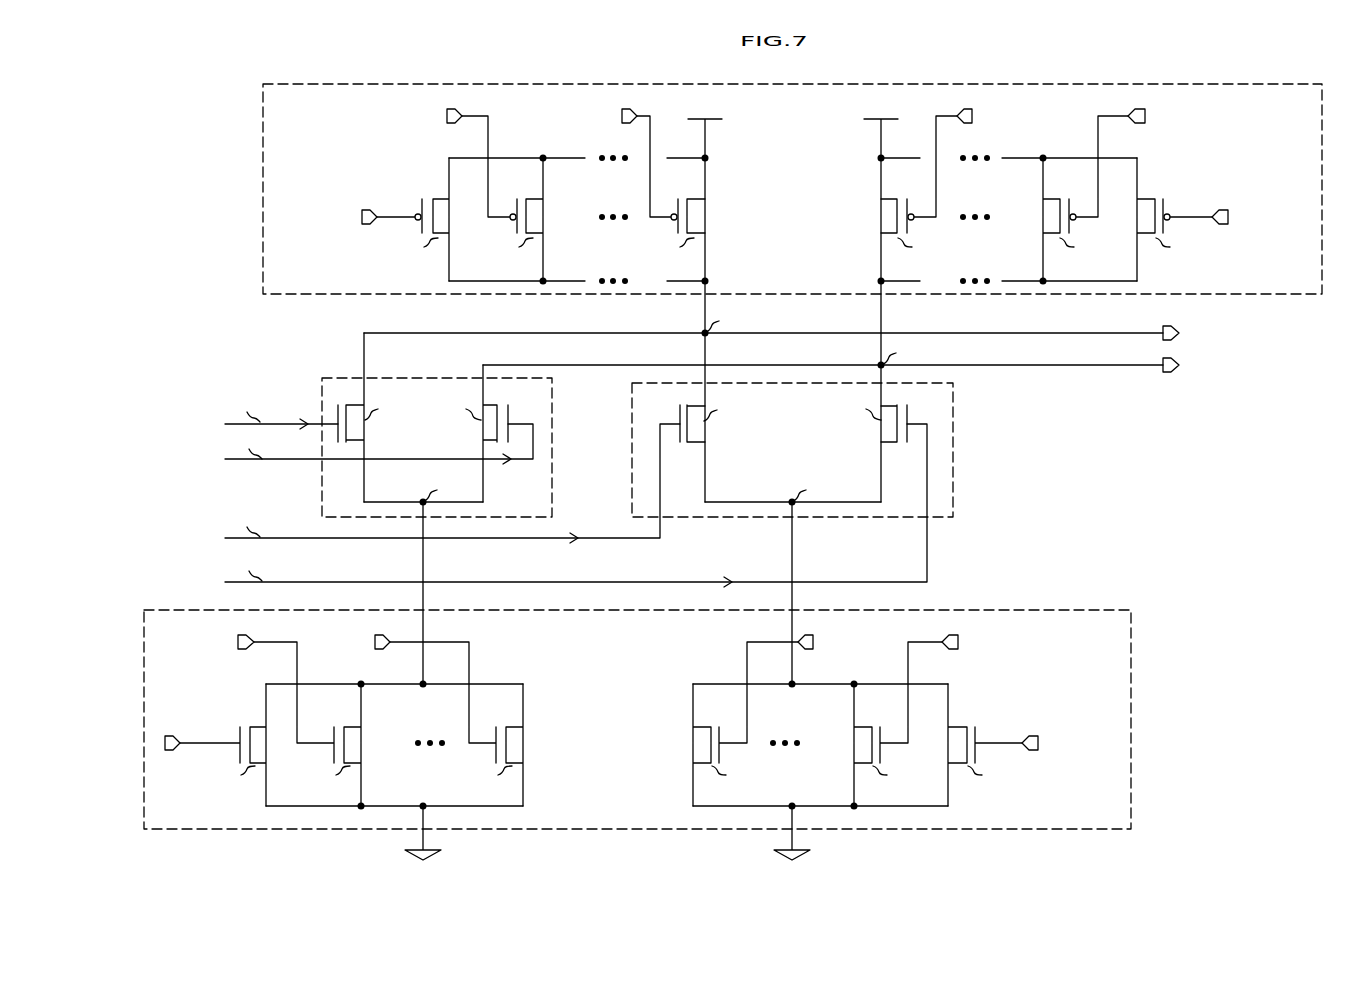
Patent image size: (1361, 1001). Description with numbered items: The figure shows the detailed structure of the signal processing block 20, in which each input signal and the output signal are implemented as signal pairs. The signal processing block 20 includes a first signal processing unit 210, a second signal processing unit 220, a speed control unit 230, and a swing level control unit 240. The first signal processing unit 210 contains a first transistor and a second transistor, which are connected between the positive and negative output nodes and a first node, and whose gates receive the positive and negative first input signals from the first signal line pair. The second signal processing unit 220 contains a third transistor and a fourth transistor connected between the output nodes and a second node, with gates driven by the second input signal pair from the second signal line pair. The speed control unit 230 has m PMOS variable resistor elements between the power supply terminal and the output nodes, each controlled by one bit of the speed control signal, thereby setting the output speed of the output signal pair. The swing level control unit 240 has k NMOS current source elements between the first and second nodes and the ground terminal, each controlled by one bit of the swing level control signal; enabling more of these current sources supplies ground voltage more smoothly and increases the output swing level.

The signal processing block 20 is at (1288, 45).
The first signal processing unit 210 is at (552, 405).
The second signal processing unit 220 is at (953, 405).
The speed control unit 230 is at (1178, 84).
The swing level control unit 240 is at (1131, 632).